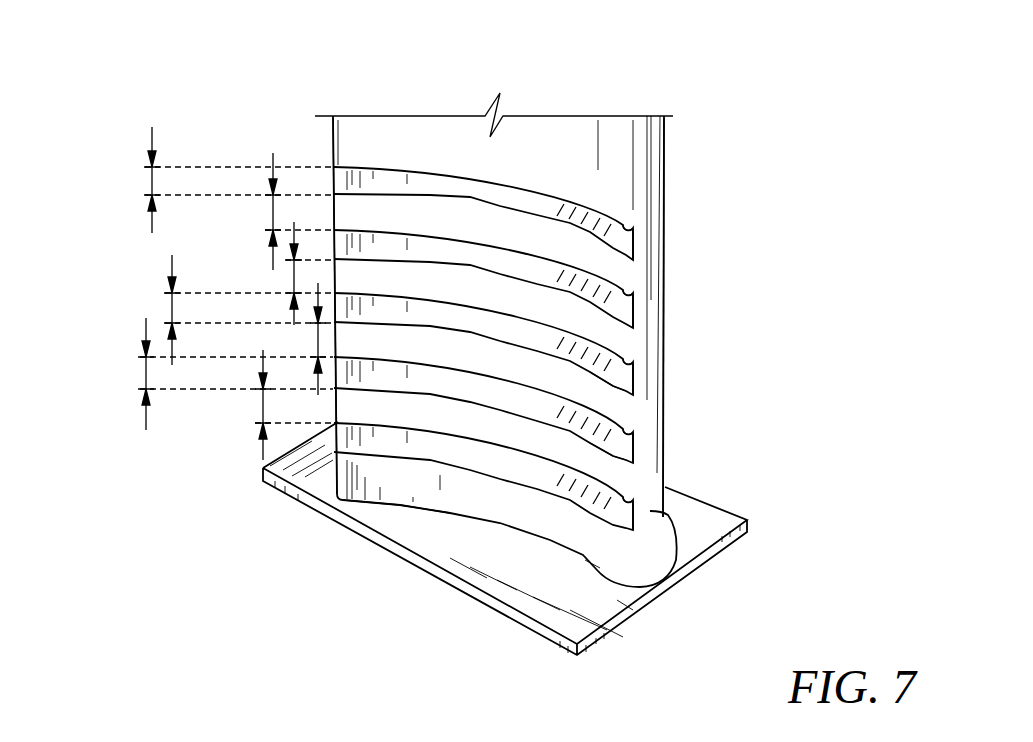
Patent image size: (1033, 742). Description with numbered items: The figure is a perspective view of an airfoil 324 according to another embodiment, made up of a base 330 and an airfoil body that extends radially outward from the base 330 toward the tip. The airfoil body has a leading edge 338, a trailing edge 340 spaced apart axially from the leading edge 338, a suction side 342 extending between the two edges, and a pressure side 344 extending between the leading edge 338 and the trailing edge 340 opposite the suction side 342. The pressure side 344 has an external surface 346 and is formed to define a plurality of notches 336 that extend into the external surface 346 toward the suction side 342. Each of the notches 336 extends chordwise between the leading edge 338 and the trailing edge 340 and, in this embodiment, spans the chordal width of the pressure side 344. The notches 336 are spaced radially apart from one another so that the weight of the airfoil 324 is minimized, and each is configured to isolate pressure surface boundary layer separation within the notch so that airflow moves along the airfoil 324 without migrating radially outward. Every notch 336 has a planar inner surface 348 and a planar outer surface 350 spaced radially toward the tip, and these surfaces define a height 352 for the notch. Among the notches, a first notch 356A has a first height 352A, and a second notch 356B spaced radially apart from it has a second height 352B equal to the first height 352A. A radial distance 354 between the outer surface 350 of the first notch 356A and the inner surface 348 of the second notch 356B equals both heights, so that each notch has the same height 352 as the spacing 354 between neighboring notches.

The airfoil 324 is at (128, 84).
The base 330 is at (713, 524).
The plurality of notches 336 is at (655, 249).
The leading edge 338 is at (653, 207).
The trailing edge 340 is at (333, 152).
The suction side 342 is at (690, 162).
The pressure side 344 is at (435, 505).
The external surface 346 is at (557, 537).
The inner surface 348 is at (455, 200).
The outer surface 350 is at (634, 229).
The height 352 is at (152, 178).
The first height 352A is at (146, 365).
The second height 352B is at (172, 300).
The radial distance 354 is at (273, 222).
The first notch 356A is at (625, 449).
The second notch 356B is at (627, 369).